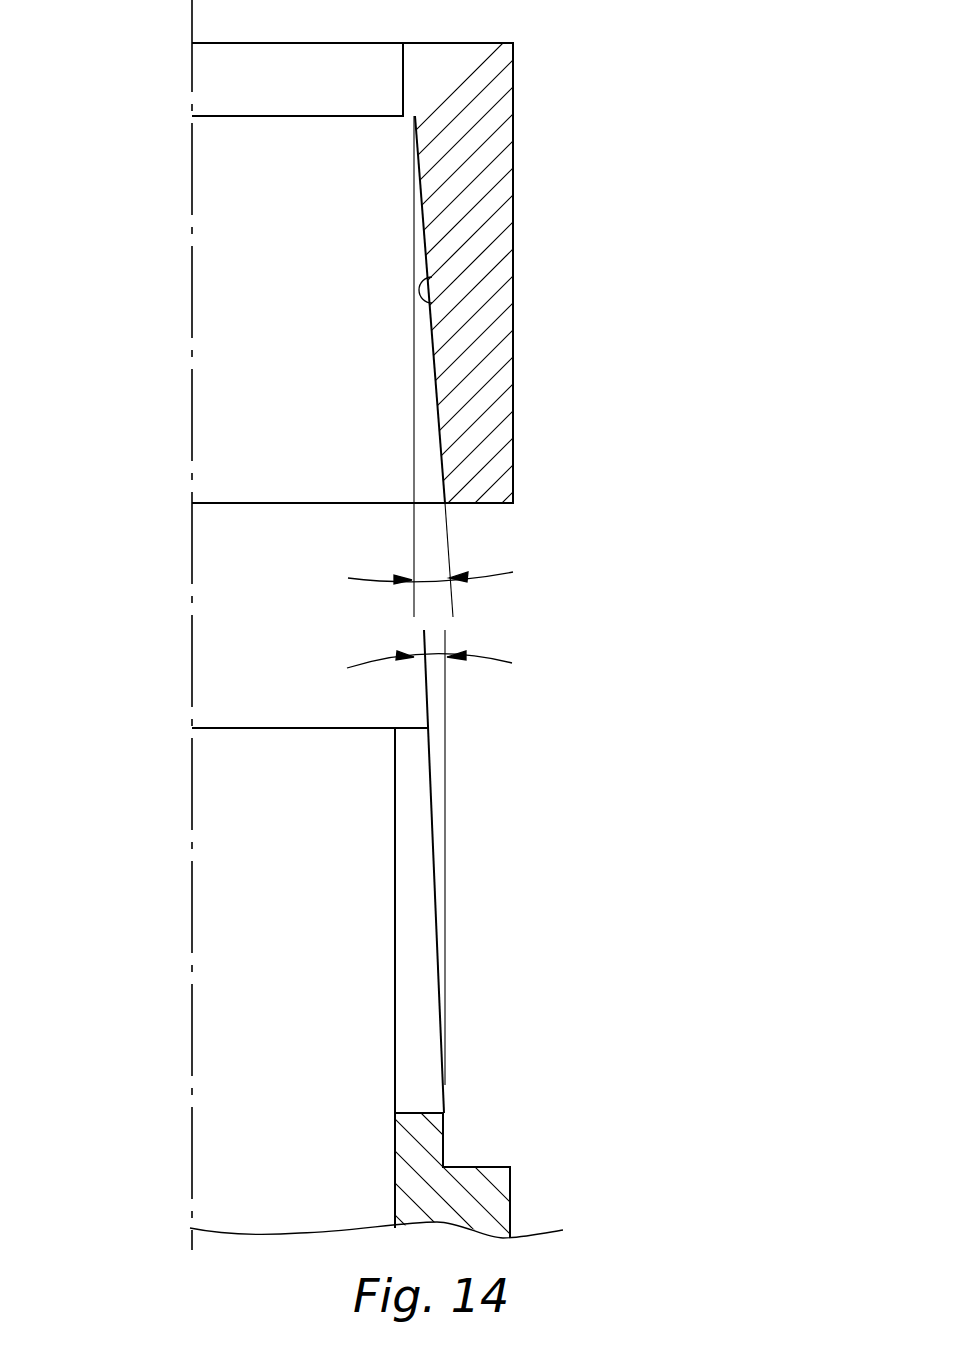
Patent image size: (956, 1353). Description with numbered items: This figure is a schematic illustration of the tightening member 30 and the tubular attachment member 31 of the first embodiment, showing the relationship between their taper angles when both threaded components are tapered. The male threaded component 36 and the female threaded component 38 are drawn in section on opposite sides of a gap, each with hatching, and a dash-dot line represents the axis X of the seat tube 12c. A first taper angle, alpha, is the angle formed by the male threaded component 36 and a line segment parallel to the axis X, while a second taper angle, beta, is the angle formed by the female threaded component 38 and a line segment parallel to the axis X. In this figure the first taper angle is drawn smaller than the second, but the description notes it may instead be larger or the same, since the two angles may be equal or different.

The seat tube 12c is at (503, 1200).
The tightening member 30 is at (463, 938).
The tubular attachment member 31 is at (518, 338).
The male threaded component 36 is at (435, 880).
The female threaded component 38 is at (432, 277).
The axis X is at (190, 625).